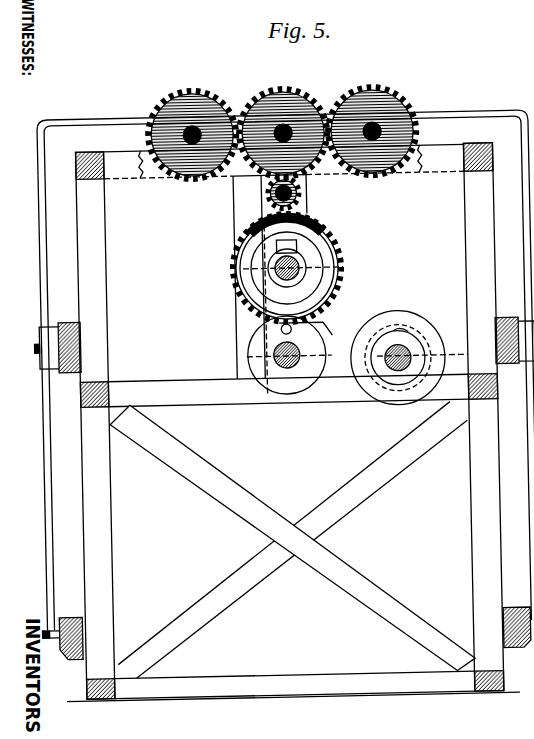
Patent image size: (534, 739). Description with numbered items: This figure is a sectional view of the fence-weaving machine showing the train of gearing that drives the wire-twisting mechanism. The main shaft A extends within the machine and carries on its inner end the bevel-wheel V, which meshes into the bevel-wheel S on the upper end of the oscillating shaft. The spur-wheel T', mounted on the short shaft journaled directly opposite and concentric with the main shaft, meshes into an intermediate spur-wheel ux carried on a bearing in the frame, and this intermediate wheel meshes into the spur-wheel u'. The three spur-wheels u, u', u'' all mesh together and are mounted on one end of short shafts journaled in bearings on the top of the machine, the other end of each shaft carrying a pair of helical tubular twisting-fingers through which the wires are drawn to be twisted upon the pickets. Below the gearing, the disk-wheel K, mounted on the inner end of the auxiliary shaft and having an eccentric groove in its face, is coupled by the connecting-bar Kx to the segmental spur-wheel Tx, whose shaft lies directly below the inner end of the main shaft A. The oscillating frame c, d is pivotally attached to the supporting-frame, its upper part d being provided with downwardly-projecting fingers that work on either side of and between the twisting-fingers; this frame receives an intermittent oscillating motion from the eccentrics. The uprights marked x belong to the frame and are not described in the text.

The spur-wheel u is at (192, 124).
The spur-wheel u' is at (283, 122).
The spur-wheel u'' is at (372, 120).
The intermediate spur-wheel ux is at (305, 195).
The bevel-wheel S is at (327, 224).
The main shaft A is at (298, 262).
The spur-wheel T' is at (307, 304).
The bevel-wheel V is at (256, 290).
The segmental spur-wheel Tx is at (331, 334).
The connecting-bar Kx is at (326, 350).
The disk-wheel K is at (416, 326).
The upper part of oscillating frame d is at (119, 117).
The oscillating frame c is at (286, 397).
The frame upright x is at (290, 421).